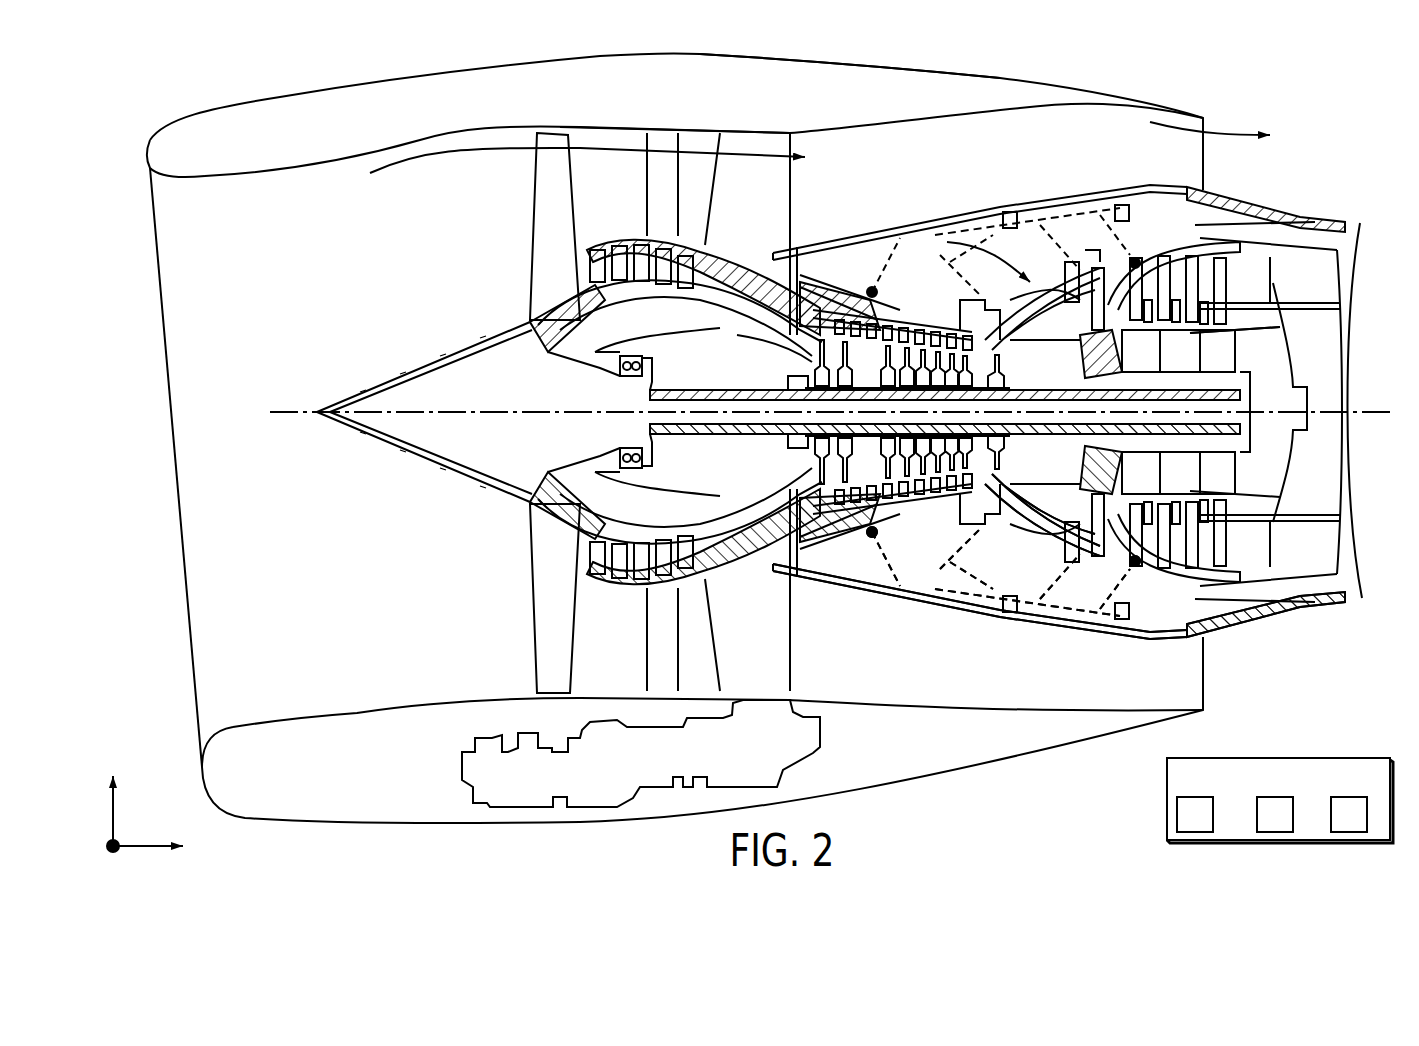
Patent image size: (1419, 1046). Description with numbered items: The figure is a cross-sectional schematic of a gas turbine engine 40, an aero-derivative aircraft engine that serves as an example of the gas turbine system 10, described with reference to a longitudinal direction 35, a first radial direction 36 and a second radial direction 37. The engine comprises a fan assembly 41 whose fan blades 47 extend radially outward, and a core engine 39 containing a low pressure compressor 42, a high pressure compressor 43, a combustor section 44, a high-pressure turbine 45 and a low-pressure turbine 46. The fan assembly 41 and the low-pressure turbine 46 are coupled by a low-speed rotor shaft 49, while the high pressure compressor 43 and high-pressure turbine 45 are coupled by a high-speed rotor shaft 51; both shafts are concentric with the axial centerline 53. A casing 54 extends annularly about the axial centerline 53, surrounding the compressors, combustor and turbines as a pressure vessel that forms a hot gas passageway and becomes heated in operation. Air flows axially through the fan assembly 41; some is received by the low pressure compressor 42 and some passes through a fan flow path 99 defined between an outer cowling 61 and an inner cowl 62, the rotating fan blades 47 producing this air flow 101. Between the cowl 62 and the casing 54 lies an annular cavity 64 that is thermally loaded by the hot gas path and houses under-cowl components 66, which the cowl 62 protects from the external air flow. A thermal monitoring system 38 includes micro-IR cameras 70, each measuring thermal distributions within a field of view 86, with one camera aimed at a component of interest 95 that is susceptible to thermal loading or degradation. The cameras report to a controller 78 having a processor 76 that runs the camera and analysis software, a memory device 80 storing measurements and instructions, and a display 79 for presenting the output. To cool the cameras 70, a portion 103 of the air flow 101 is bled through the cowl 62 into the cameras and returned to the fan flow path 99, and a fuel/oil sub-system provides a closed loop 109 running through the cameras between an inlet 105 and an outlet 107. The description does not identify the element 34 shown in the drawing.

The gas turbine system 10 is at (452, 595).
The turbine rear frame 34 is at (1282, 327).
The longitudinal axis or direction 35 is at (142, 846).
The first radial direction 36 is at (113, 818).
The second radial direction 37 is at (108, 850).
The thermal monitoring system 38 is at (1010, 218).
The core engine 39 is at (915, 520).
The gas turbine engine 40 is at (228, 92).
The fan assembly 41 is at (560, 125).
The low pressure compressor 42 is at (617, 238).
The high pressure compressor 43 is at (815, 300).
The combustor section 44 is at (1045, 505).
The high-pressure turbine 45 is at (1090, 530).
The low-pressure turbine 46 is at (1207, 270).
The fan blades 47 is at (545, 200).
The low-speed rotor shaft 49 is at (1010, 385).
The high-speed rotor shaft 51 is at (1018, 440).
The axial centerline 53 is at (312, 412).
The casing 54 is at (845, 262).
The cowling 61 is at (935, 82).
The cowl 62 is at (1000, 212).
The annular cavity 64 is at (878, 222).
The under-cowl components 66 is at (1085, 250).
The IR cameras 70 is at (925, 237).
The processor 76 is at (1331, 812).
The controller 78 is at (1393, 800).
The display 79 is at (1257, 812).
The memory device 80 is at (1177, 812).
The field of view 86 is at (1172, 200).
The component of interest 95 is at (1345, 233).
The fan flow path 99 is at (932, 138).
The air flow 101 is at (482, 145).
The portion of the air flow 103 is at (907, 272).
The inlet 105 is at (812, 362).
The outlet 107 is at (1262, 305).
The closed loop 109 is at (1300, 380).